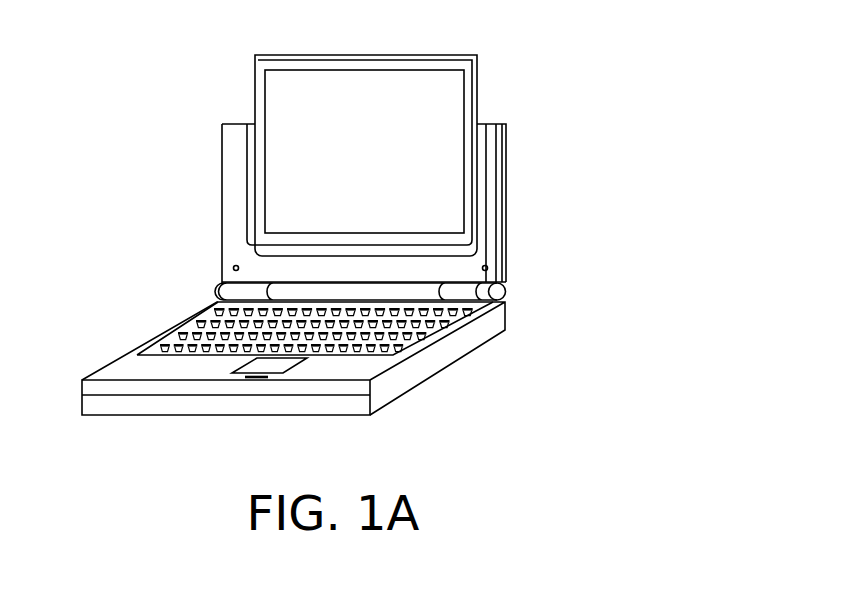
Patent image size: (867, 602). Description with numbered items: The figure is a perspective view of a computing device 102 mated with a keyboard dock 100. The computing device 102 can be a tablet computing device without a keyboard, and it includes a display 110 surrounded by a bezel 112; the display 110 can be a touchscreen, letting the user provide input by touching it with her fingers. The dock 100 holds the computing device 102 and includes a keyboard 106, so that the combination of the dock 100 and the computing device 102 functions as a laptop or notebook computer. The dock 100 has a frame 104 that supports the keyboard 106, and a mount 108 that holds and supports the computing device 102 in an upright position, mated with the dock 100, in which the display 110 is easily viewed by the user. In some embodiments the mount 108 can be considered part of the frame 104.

The keyboard dock 100 is at (180, 300).
The computing device 102 is at (535, 49).
The frame 104 is at (475, 348).
The keyboard 106 is at (170, 339).
The mount 108 is at (507, 190).
The display 110 is at (346, 177).
The bezel 112 is at (257, 113).